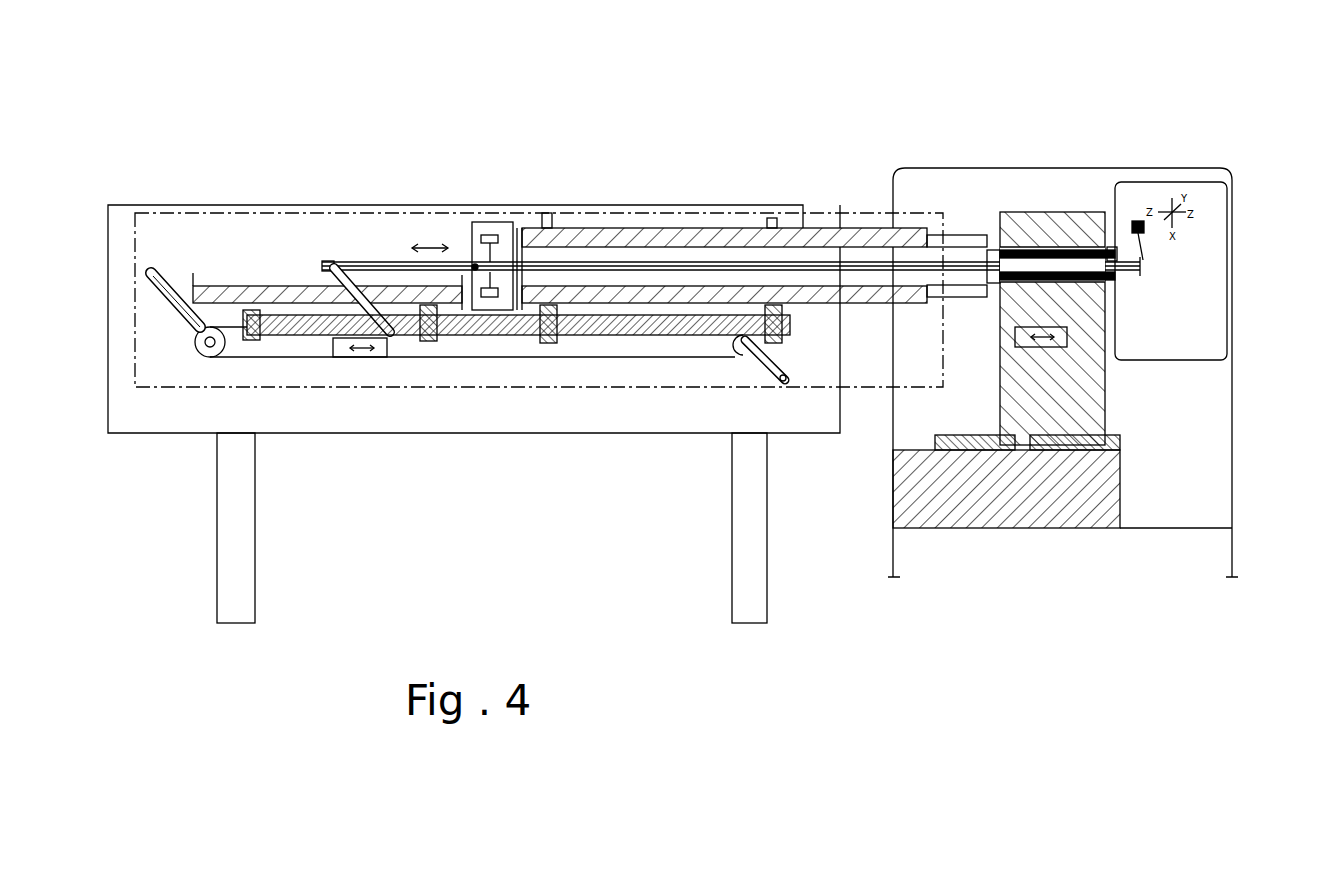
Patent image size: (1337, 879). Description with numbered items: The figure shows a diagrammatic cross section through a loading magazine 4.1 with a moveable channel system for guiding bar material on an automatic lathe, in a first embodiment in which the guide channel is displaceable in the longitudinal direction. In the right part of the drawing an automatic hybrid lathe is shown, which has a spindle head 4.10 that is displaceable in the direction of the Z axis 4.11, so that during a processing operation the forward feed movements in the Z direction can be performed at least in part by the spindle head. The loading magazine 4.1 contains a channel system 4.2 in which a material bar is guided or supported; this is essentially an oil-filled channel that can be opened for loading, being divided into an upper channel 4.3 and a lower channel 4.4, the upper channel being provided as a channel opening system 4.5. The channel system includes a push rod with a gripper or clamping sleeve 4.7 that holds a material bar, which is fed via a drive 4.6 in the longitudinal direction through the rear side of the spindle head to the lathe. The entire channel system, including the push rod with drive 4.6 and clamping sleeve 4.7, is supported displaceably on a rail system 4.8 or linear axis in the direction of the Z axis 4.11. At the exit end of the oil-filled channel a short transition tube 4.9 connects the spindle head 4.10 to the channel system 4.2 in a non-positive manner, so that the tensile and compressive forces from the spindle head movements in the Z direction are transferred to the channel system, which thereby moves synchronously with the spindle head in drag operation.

The loading magazine 4.1 is at (437, 433).
The channel system 4.2 is at (645, 522).
The upper channel 4.3 is at (740, 228).
The lower channel 4.4 is at (598, 307).
The channel opening system 4.5 is at (547, 213).
The drive 4.6 is at (172, 282).
The clamping sleeve 4.7 is at (490, 222).
The rail system 4.8 is at (522, 337).
The transition tube 4.9 is at (963, 237).
The spindle head 4.10 is at (1108, 387).
The Z axis 4.11 is at (358, 360).